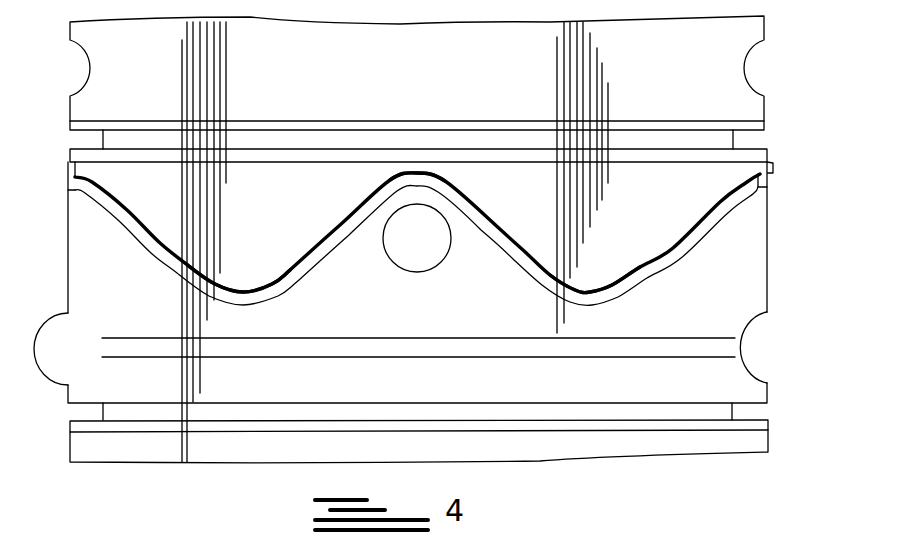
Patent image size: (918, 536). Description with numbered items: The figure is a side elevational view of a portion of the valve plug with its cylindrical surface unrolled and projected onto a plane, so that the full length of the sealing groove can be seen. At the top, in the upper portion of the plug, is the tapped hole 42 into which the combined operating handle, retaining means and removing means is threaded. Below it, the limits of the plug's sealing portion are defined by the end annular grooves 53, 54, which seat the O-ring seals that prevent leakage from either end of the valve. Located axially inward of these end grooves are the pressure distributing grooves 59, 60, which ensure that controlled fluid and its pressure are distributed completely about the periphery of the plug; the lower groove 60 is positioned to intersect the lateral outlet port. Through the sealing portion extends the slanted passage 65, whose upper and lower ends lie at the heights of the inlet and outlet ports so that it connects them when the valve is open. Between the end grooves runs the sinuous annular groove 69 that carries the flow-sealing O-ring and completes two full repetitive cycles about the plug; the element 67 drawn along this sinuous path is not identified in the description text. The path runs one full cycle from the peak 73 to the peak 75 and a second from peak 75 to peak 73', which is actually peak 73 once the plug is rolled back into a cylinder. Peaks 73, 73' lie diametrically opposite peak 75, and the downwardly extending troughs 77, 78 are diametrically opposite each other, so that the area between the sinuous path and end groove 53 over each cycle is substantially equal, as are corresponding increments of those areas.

The tapped hole 42 is at (88, 68).
The annular groove 53 is at (734, 143).
The pressure distributing groove 59 is at (768, 155).
The peak 73 is at (45, 178).
The peak 73' is at (794, 181).
The corrugated strip 67 is at (417, 253).
The sinuous annular groove 69 is at (182, 265).
The peak 75 is at (430, 185).
The trough 77 is at (253, 297).
The trough 78 is at (612, 303).
The slanted passage 65 is at (417, 267).
The pressure distributing groove 60 is at (687, 347).
The annular groove 54 is at (733, 410).